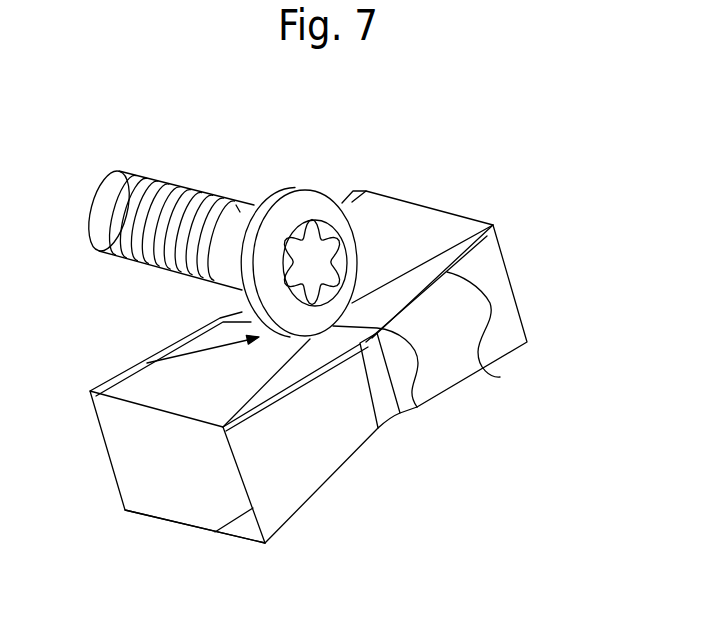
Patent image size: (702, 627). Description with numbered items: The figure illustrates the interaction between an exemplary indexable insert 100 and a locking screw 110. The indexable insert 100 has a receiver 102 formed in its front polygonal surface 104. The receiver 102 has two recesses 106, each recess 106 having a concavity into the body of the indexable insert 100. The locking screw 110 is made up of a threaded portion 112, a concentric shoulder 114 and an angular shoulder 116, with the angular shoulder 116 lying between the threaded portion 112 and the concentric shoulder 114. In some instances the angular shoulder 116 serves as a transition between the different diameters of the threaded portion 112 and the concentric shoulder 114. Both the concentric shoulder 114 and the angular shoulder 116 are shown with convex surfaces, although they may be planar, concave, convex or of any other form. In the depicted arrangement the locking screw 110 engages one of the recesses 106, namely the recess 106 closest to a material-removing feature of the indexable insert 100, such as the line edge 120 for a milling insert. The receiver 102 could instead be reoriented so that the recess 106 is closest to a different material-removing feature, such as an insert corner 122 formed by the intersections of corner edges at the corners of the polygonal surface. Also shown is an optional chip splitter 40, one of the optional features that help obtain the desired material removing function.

The indexable insert 100 is at (500, 150).
The receiver 102 is at (138, 362).
The front polygonal surface 104 is at (387, 197).
The recess 106 is at (238, 314).
The locking screw 110 is at (177, 162).
The threaded portion 112 is at (108, 186).
The concentric shoulder 114 is at (294, 188).
The angular shoulder 116 is at (243, 220).
The line edge 120 is at (500, 377).
The insert corner 122 is at (215, 532).
The chip splitter 40 is at (387, 424).